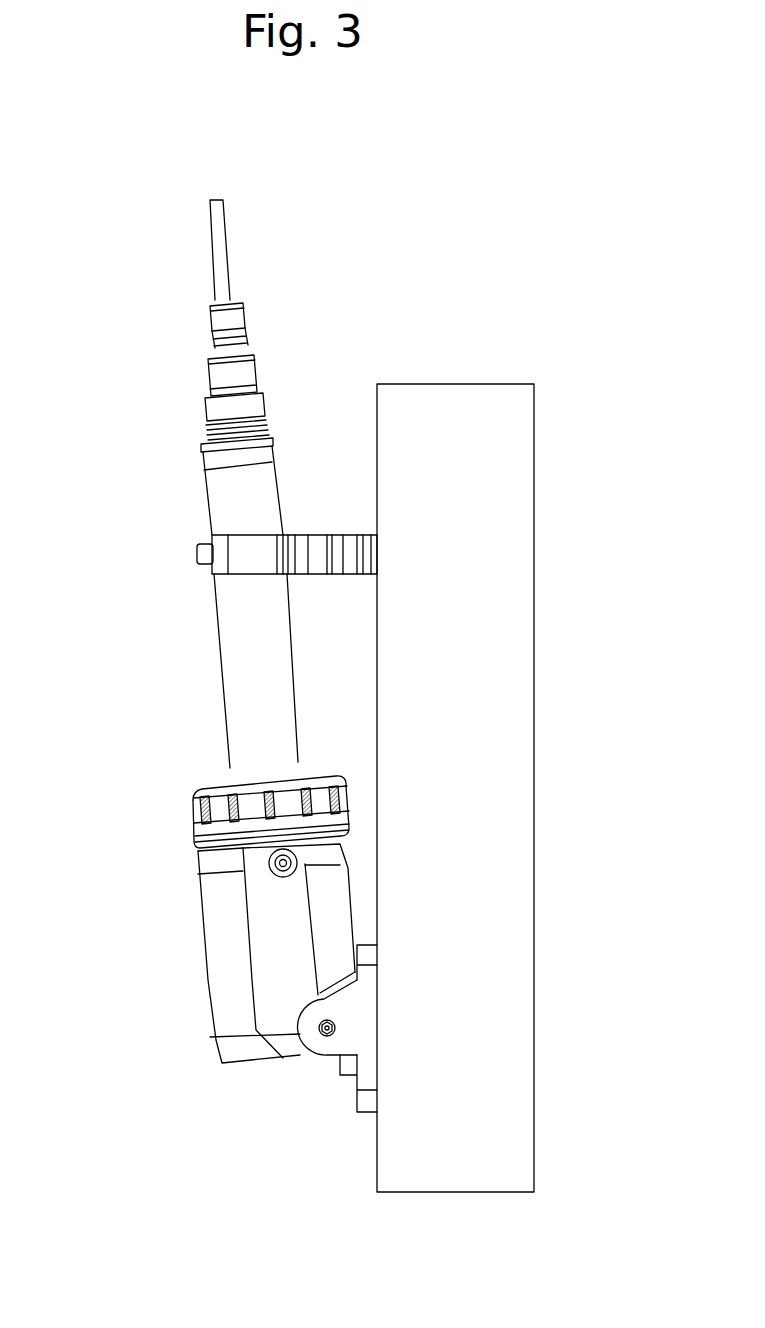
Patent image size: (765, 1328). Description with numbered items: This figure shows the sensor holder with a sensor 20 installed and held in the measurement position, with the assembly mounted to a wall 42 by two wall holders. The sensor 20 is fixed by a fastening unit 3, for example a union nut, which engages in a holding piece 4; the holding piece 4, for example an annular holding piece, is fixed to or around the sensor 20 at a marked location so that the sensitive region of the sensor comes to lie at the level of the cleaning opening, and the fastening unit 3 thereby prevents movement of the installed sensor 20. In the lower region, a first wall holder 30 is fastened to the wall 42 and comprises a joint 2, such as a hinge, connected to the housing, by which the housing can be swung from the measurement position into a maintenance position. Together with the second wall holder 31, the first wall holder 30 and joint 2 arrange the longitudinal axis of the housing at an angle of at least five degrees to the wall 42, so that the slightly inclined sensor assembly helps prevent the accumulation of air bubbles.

The joint 2 is at (210, 1037).
The fastening unit 3 is at (201, 804).
The holding piece 4 is at (218, 776).
The sensor 20 is at (230, 513).
The first wall holder 30 is at (341, 1124).
The second wall holder 31 is at (340, 510).
The wall 42 is at (502, 977).